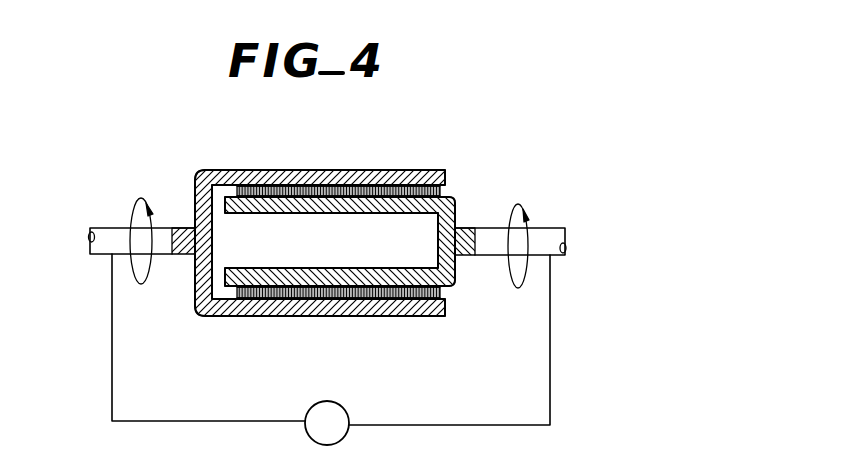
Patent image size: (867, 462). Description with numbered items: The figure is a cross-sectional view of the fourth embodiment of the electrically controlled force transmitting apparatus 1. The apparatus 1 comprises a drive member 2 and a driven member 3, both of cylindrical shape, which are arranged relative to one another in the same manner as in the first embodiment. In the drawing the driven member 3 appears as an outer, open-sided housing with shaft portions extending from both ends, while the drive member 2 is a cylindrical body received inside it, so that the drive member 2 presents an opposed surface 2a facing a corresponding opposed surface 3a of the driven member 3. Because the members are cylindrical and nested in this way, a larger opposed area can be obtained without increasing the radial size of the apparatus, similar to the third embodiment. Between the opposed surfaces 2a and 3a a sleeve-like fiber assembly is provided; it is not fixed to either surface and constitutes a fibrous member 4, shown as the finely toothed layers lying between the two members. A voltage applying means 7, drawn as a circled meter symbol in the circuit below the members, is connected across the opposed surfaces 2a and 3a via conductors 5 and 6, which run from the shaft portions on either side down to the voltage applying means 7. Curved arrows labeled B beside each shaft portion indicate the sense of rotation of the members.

The electrically controlled force transmitting apparatus 1 is at (350, 158).
The drive member 2 is at (457, 204).
The opposed surface 2a is at (383, 296).
The driven member 3 is at (198, 311).
The opposed surface 3a is at (268, 190).
The fibrous member 4 is at (278, 292).
The conductor 5 is at (551, 352).
The conductor 6 is at (110, 354).
The voltage applying means 7 is at (343, 406).
The rotation direction B is at (329, 228).